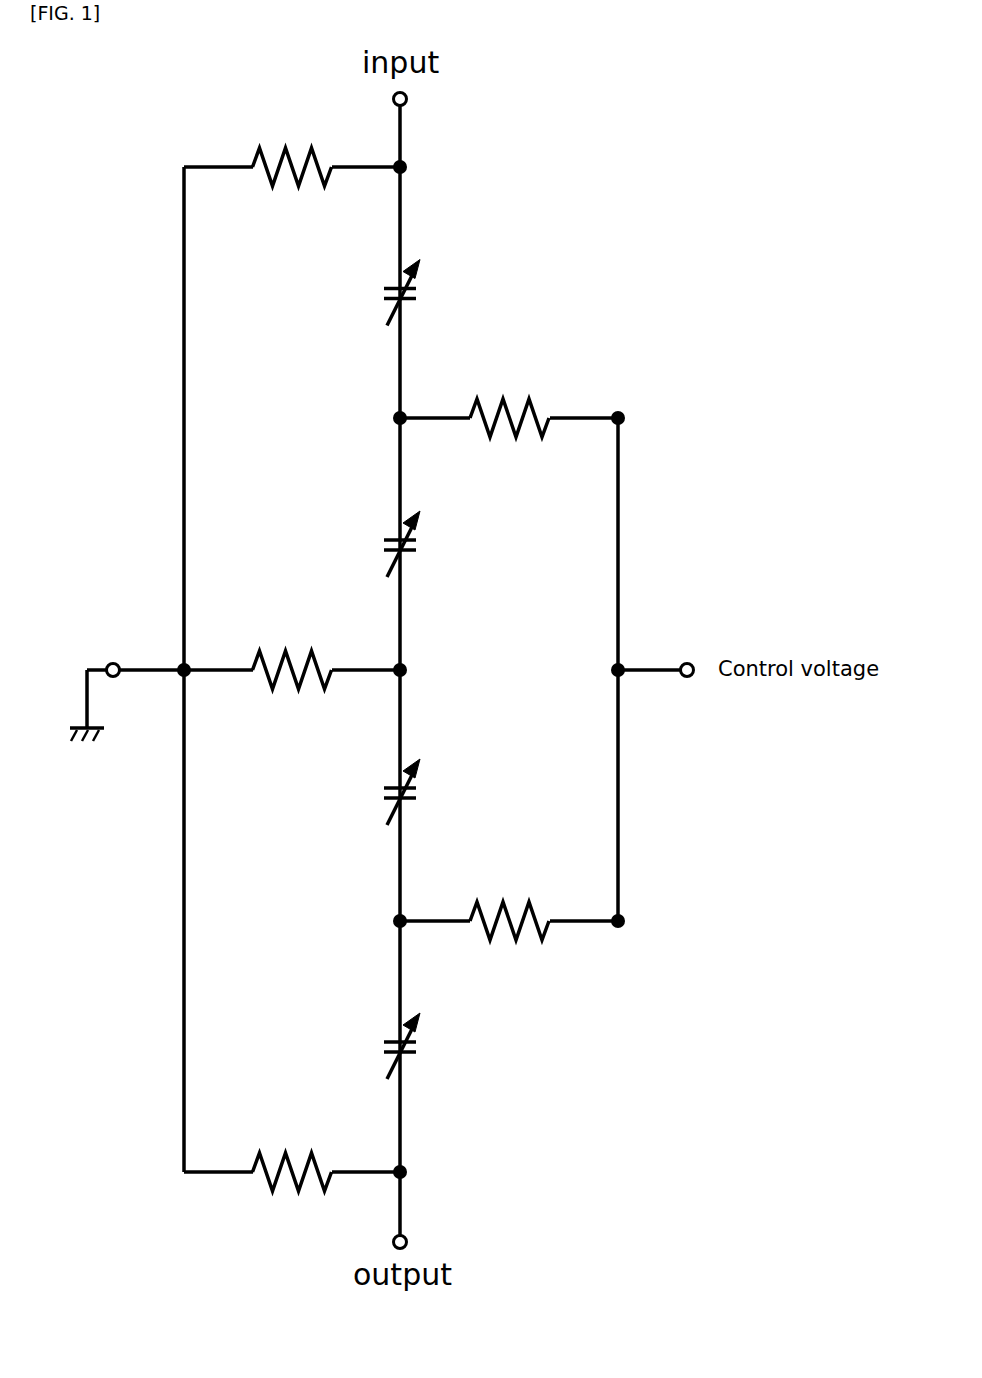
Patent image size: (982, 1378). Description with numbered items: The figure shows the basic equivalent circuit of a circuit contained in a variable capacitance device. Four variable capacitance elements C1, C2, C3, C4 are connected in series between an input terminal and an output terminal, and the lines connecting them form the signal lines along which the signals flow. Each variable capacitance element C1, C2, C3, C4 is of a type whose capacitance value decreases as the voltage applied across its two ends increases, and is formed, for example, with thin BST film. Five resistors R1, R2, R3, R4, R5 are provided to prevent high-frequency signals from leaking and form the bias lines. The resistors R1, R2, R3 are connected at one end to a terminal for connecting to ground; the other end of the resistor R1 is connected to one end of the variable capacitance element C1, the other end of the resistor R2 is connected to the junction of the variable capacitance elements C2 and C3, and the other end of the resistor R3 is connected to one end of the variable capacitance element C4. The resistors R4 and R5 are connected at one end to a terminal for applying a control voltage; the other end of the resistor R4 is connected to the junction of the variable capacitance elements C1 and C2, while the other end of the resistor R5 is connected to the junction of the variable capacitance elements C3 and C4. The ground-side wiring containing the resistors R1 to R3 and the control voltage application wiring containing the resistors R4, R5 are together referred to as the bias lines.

The resistor R1 is at (292, 149).
The resistor R2 is at (292, 653).
The resistor R3 is at (292, 1154).
The resistor R4 is at (509, 401).
The resistor R5 is at (509, 903).
The variable capacitance element C1 is at (428, 293).
The variable capacitance element C2 is at (428, 544).
The variable capacitance element C3 is at (428, 792).
The variable capacitance element C4 is at (428, 1046).